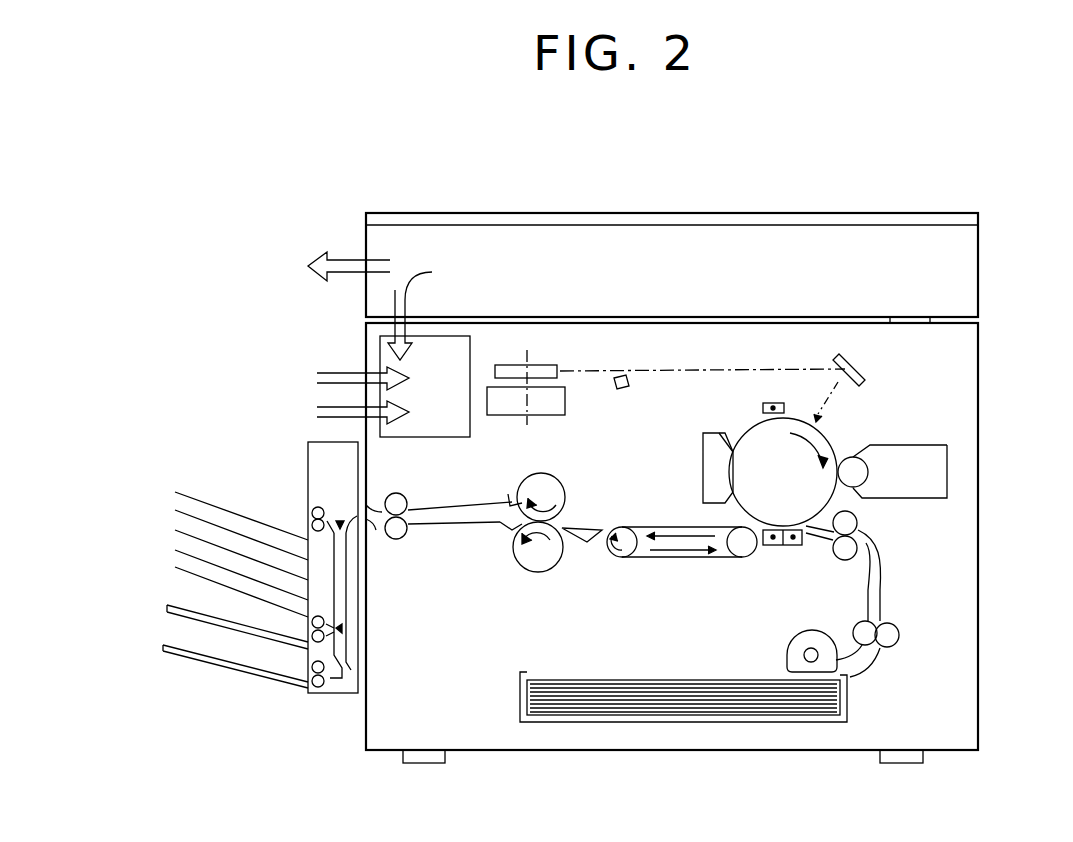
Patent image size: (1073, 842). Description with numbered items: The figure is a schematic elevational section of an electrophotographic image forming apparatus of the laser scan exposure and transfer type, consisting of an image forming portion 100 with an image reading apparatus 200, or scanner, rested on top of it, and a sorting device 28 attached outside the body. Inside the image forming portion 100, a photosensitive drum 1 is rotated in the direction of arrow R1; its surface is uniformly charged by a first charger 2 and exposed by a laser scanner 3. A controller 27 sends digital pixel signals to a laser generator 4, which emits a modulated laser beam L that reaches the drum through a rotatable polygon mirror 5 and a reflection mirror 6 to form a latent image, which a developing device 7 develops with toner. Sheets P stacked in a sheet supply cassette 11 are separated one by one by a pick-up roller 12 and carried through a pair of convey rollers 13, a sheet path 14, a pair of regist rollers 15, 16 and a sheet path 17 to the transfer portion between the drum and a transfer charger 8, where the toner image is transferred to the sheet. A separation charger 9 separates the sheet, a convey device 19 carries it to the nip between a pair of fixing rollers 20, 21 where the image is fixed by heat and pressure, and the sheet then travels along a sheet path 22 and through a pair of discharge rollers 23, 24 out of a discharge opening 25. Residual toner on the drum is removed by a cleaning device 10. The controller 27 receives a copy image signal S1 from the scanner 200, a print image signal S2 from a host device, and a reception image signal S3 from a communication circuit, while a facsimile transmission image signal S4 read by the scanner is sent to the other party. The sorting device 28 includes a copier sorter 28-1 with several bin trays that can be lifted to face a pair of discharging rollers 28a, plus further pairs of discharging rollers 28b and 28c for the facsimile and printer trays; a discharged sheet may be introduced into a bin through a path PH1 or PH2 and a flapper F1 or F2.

The photosensitive drum 1 is at (748, 430).
The first charger 2 is at (782, 404).
The laser scanner 3 is at (597, 364).
The laser generator 4 is at (622, 392).
The rotatable mirror 5 is at (541, 366).
The reflection mirror 6 is at (858, 368).
The developing device 7 is at (910, 445).
The transfer charger 8 is at (790, 547).
The separation charger 9 is at (766, 549).
The cleaning device 10 is at (704, 460).
The sheet supply cassette 11 is at (695, 725).
The pick-up roller 12 is at (797, 650).
The pair of convey rollers 13 is at (888, 645).
The sheet path 14 is at (886, 577).
The regist roller 15 is at (857, 522).
The regist roller 16 is at (852, 560).
The sheet path 17 is at (822, 541).
The convey device 19 is at (673, 527).
The fixing roller 20 is at (560, 565).
The fixing roller 21 is at (565, 478).
The sheet path 22 is at (462, 518).
The discharge roller 23 is at (400, 540).
The discharge roller 24 is at (396, 493).
The discharge opening 25 is at (376, 530).
The controller 27 is at (457, 438).
The sorting device 28 is at (320, 696).
The copier sorter 28-1 is at (160, 492).
The pair of discharging rollers 28a is at (314, 506).
The pair of discharging rollers 28b is at (312, 620).
The pair of discharging rollers 28c is at (312, 668).
The image forming portion 100 is at (1067, 434).
The image reading apparatus 200 is at (1072, 276).
The copy image signal S1 is at (429, 310).
The print image signal S2 is at (339, 379).
The reception image signal S3 is at (340, 413).
The facsimile transmission image signal S4 is at (324, 268).
The laser beam L is at (712, 371).
The sheet P is at (637, 680).
The rotation direction R1 is at (795, 453).
The path PH1 is at (337, 512).
The path PH2 is at (340, 605).
The flapper F1 is at (337, 527).
The flapper F2 is at (346, 630).